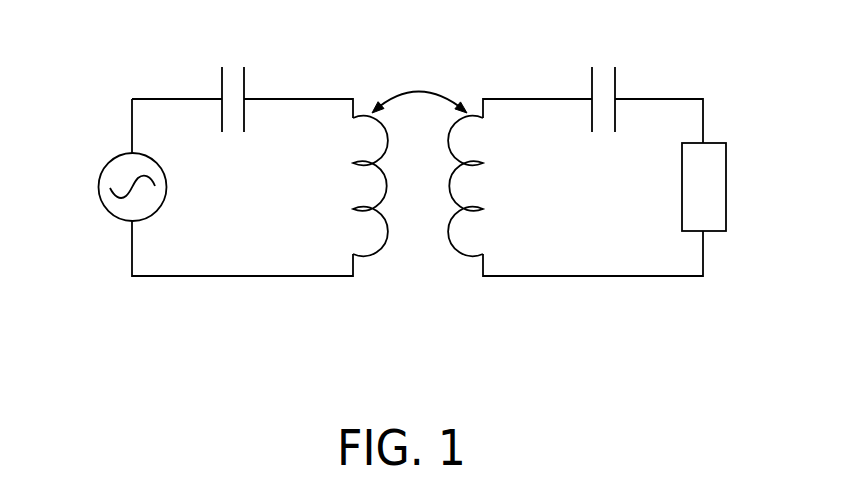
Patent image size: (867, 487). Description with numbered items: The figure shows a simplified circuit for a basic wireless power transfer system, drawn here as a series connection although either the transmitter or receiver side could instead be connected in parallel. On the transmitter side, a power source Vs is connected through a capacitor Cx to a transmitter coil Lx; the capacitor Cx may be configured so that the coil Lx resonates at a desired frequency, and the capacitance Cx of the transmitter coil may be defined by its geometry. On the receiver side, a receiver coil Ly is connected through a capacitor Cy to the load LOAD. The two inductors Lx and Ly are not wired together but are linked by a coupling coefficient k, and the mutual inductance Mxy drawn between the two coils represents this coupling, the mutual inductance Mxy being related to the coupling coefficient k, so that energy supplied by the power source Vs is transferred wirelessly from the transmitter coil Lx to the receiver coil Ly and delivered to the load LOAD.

The power source Vs is at (99, 187).
The capacitor Cx is at (232, 80).
The coil Lx is at (362, 160).
The coil Ly is at (474, 160).
The mutual inductance Mxy is at (419, 84).
The capacitor Cy is at (602, 80).
The load LOAD is at (754, 187).